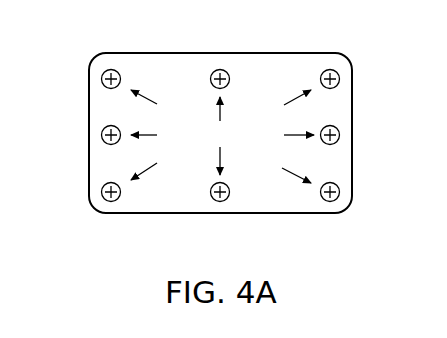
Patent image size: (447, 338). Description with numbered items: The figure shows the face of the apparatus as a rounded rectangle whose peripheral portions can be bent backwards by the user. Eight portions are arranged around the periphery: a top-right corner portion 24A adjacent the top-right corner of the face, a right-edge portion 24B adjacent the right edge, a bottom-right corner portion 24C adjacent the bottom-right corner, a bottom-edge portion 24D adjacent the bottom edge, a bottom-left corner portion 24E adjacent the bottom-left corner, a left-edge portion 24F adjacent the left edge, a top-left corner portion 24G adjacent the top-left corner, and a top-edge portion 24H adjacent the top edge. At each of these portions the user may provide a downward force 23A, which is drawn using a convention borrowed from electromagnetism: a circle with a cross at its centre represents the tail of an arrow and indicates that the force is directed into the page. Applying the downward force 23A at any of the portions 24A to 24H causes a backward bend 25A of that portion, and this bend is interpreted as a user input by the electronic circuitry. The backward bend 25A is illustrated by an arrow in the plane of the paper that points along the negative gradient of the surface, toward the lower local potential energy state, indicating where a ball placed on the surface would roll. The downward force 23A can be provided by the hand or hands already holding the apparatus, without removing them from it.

The downward force 23A is at (242, 133).
The top-right corner portion 24A is at (345, 73).
The right-edge portion 24B is at (341, 137).
The bottom-right corner portion 24C is at (341, 197).
The bottom-edge portion 24D is at (218, 206).
The bottom-left corner portion 24E is at (98, 200).
The left-edge portion 24F is at (100, 133).
The top-left corner portion 24G is at (108, 62).
The top-edge portion 24H is at (219, 62).
The backward bend 25A is at (171, 87).